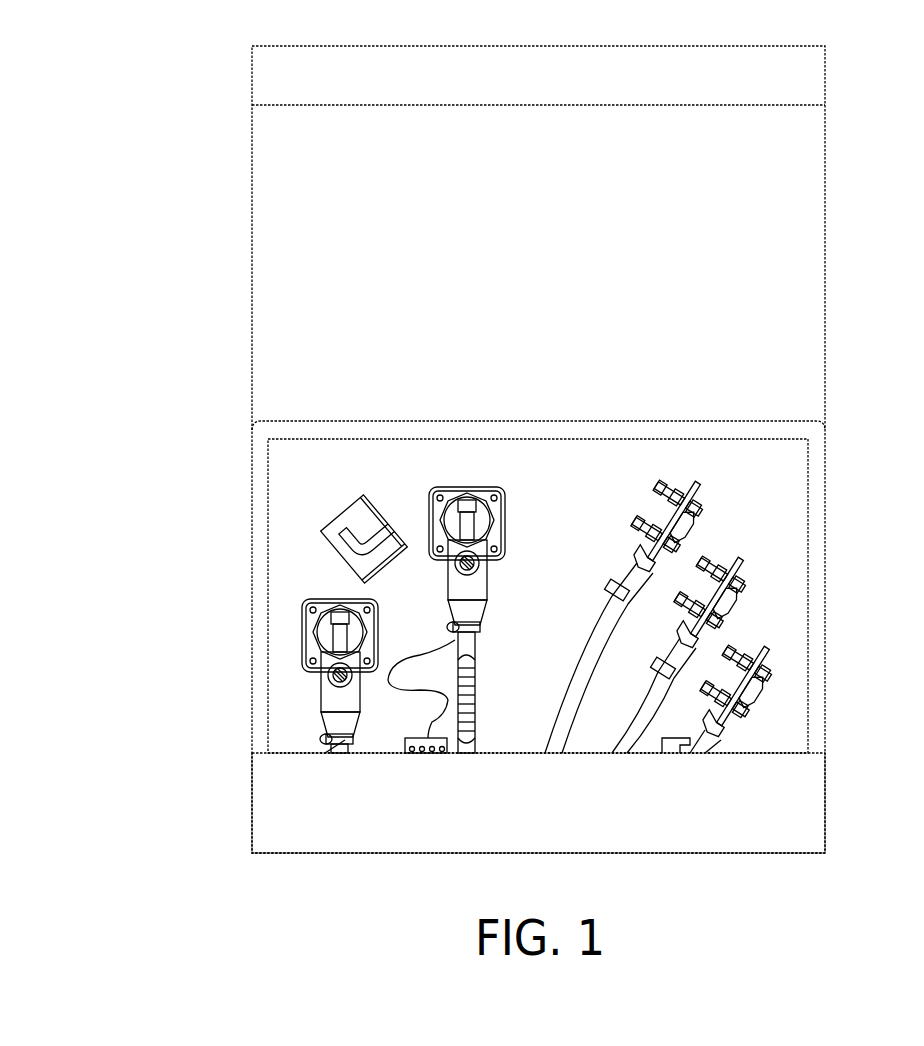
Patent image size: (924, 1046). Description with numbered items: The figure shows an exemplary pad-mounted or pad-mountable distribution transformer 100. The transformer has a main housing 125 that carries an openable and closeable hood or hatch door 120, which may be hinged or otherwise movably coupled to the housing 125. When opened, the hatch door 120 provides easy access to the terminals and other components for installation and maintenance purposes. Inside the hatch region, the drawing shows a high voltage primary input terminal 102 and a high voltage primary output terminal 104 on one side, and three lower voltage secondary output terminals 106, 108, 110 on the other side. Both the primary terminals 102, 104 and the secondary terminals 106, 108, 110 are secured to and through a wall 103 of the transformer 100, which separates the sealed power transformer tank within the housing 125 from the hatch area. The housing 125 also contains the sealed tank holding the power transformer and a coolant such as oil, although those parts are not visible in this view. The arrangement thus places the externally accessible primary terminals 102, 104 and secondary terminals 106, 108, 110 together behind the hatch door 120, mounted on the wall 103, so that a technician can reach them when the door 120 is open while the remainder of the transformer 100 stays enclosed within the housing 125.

The pad-mounted distribution transformer 100 is at (722, 900).
The high voltage primary input terminal 102 is at (315, 625).
The wall 103 is at (586, 518).
The high voltage primary output terminal 104 is at (440, 510).
The lower voltage secondary output terminal 106 is at (687, 533).
The lower voltage secondary output terminal 108 is at (733, 607).
The lower voltage secondary output terminal 110 is at (758, 690).
The hatch door 120 is at (252, 240).
The housing 125 is at (252, 790).